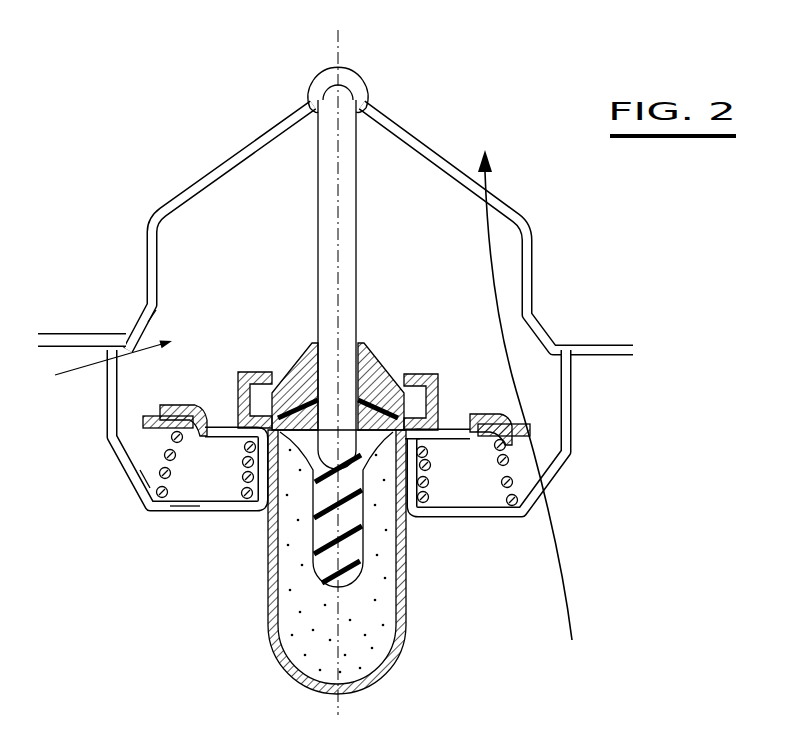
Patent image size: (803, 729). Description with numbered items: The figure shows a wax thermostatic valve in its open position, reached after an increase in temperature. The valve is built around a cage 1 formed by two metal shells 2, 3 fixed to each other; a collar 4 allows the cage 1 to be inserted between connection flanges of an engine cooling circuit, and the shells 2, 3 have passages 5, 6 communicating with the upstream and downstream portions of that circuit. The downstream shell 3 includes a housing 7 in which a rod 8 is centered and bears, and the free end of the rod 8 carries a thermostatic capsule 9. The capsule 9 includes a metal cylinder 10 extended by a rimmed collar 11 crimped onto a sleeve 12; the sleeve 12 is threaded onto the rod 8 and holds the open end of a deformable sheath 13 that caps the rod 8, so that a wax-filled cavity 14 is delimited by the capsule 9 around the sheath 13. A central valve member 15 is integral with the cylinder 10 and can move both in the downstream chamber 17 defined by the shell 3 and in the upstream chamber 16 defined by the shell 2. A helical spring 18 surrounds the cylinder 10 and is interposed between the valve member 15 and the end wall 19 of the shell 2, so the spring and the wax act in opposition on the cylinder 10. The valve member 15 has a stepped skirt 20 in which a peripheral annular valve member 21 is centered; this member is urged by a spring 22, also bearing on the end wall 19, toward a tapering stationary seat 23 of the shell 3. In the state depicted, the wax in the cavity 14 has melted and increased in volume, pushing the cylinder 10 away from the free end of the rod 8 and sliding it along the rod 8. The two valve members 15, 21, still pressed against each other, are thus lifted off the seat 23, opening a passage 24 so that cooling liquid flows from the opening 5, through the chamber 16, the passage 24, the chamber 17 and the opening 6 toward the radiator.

The cage 1 is at (326, 215).
The upstream metal shell 2 is at (153, 463).
The downstream metal shell 3 is at (167, 203).
The collar 4 is at (43, 333).
The passage of upstream shell 5 is at (516, 458).
The passage of downstream shell 6 is at (429, 158).
The housing 7 is at (360, 97).
The rod 8 is at (307, 98).
The thermostatic capsule 9 is at (394, 652).
The metal cylinder 10 is at (270, 595).
The rimmed collar 11 is at (410, 373).
The sleeve 12 is at (377, 353).
The deformable sheath 13 is at (327, 563).
The cavity 14 is at (382, 588).
The central valve member 15 is at (453, 430).
The upstream chamber 16 is at (470, 483).
The downstream chamber 17 is at (276, 228).
The helical spring 18 is at (243, 505).
The end wall 19 is at (183, 512).
The stepped skirt 20 is at (180, 403).
The peripheral annular valve member 21 is at (143, 417).
The spring 22 is at (157, 458).
The tapering stationary seat 23 is at (152, 330).
The passage 24 is at (95, 366).